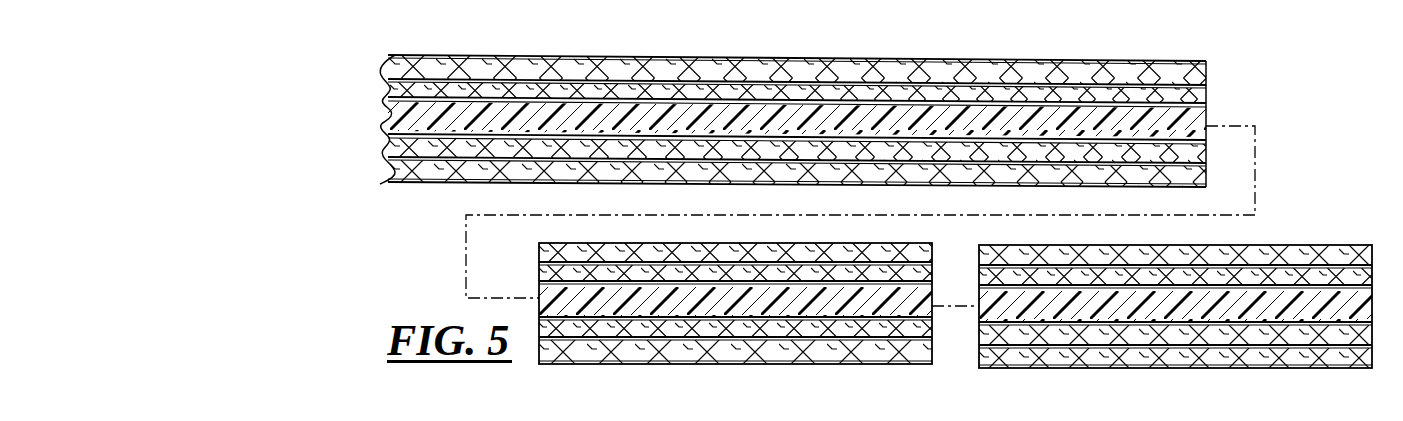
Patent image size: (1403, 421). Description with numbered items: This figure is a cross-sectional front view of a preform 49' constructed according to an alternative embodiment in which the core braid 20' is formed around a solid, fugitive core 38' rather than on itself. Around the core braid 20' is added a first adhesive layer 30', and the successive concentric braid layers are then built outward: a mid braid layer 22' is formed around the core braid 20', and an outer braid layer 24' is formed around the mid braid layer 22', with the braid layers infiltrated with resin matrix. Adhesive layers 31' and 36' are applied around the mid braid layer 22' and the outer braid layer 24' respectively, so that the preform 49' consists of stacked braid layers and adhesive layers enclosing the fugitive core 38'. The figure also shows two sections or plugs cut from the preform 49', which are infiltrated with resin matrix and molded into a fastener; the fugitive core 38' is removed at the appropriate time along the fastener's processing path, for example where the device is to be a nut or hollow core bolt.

The preform 49' is at (793, 100).
The outer braid layer 24' is at (776, 55).
The mid braid layer 22' is at (766, 84).
The core braid 20' is at (756, 143).
The fugitive core 38' is at (762, 130).
The adhesive layer 36' is at (824, 44).
The adhesive layer 31' is at (828, 68).
The first adhesive layer 30' is at (827, 94).